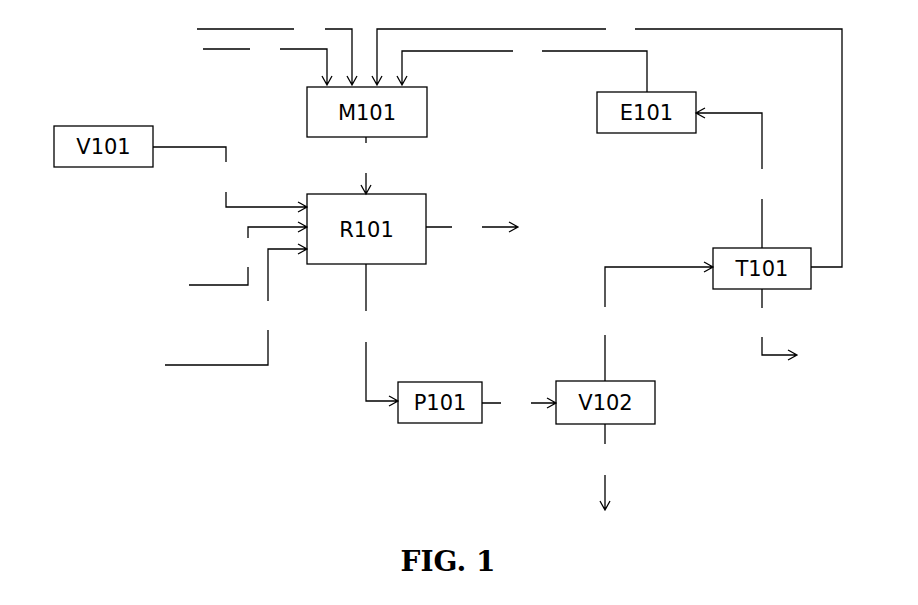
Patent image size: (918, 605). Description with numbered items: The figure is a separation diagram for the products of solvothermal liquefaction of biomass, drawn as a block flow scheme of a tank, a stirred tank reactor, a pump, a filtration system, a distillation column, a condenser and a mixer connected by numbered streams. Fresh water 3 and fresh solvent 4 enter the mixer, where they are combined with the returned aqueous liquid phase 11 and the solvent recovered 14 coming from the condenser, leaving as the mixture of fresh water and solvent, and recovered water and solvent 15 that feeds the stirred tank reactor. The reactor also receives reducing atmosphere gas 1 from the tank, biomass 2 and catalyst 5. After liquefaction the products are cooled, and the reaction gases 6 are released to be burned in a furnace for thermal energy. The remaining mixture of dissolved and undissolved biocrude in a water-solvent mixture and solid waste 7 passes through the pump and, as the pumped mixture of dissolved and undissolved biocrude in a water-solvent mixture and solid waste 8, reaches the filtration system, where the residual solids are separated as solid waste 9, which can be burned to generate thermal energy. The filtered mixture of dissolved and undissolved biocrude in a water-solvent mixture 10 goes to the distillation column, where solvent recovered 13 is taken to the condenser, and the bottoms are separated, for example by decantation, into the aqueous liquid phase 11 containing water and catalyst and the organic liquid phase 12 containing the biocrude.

The reducing atmosphere gas 1 is at (230, 179).
The biomass 2 is at (236, 304).
The fresh water 3 is at (277, 49).
The fresh solvent 4 is at (267, 62).
The catalyst 5 is at (248, 253).
The reaction gases 6 is at (472, 227).
The mixture of dissolved and undissolved biocrude in a water-solvent mixture and sol 7 is at (373, 335).
The mixture of dissolved and undissolved biocrude in a water-solvent mixture and sol 8 is at (519, 402).
The solid waste 9 is at (607, 467).
The mixture of dissolved and undissolved biocrude in a water-solvent mixture 10 is at (651, 321).
The aqueous liquid phase 11 is at (607, 141).
The organic liquid phase 12 is at (772, 324).
The solvent recovered 13 is at (736, 178).
The solvent recovered 14 is at (522, 65).
The mixture of fresh water and solvent, and recovered water and solvent 15 is at (365, 165).